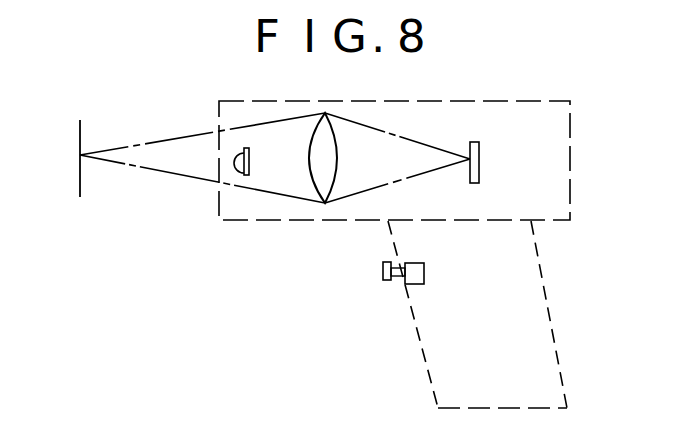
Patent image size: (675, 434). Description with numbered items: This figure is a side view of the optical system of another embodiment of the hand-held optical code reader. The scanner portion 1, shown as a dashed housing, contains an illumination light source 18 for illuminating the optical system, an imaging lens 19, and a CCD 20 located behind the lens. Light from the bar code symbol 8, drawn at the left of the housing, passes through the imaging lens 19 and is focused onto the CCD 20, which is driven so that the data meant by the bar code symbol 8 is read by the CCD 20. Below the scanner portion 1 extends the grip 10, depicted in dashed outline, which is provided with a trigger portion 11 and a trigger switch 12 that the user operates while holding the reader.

The scanner portion 1 is at (497, 99).
The bar code symbol 8 is at (80, 164).
The grip 10 is at (555, 343).
The trigger portion 11 is at (417, 276).
The trigger switch 12 is at (383, 271).
The illumination light source 18 is at (245, 176).
The imaging lens 19 is at (320, 184).
The CCD 20 is at (480, 163).